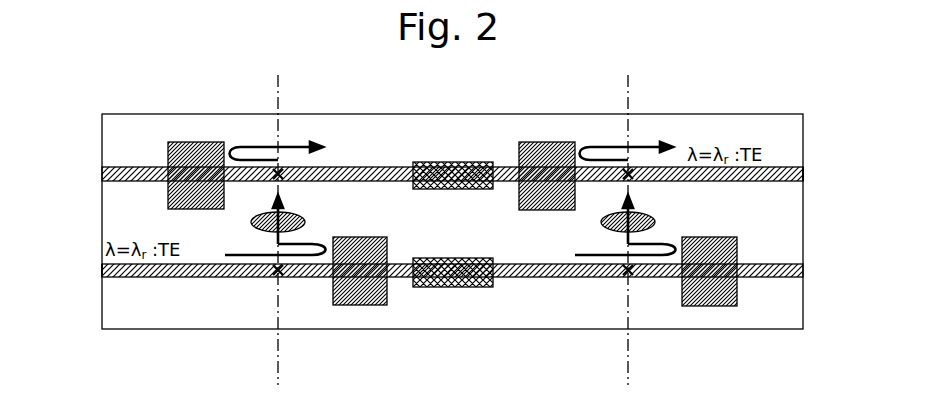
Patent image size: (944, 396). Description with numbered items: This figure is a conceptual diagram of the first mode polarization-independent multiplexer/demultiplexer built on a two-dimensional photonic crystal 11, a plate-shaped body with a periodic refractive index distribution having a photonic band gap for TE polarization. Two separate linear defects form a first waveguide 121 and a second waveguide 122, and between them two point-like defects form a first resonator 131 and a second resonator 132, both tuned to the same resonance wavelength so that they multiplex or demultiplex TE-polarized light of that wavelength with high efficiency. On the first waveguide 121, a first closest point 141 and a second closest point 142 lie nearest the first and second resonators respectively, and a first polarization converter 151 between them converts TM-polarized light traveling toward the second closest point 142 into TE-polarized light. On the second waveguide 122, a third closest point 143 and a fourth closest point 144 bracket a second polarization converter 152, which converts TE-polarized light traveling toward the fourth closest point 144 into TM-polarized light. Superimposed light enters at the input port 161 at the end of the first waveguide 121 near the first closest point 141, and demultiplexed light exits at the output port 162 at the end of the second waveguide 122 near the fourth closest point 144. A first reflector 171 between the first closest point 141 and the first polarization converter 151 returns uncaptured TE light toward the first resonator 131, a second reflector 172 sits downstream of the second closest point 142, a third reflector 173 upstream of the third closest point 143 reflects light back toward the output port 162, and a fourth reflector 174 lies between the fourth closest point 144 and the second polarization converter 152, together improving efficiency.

The two-dimensional photonic crystal 11 is at (747, 128).
The first waveguide 121 is at (128, 275).
The second waveguide 122 is at (130, 167).
The first resonator 131 is at (305, 215).
The second resonator 132 is at (612, 215).
The first closest point 141 is at (278, 274).
The second closest point 142 is at (628, 275).
The third closest point 143 is at (278, 174).
The fourth closest point 144 is at (628, 174).
The first polarization converter 151 is at (413, 290).
The second polarization converter 152 is at (473, 160).
The input port 161 is at (102, 267).
The output port 162 is at (803, 173).
The first reflector 171 is at (343, 280).
The second reflector 172 is at (705, 278).
The third reflector 173 is at (190, 170).
The fourth reflector 174 is at (545, 170).